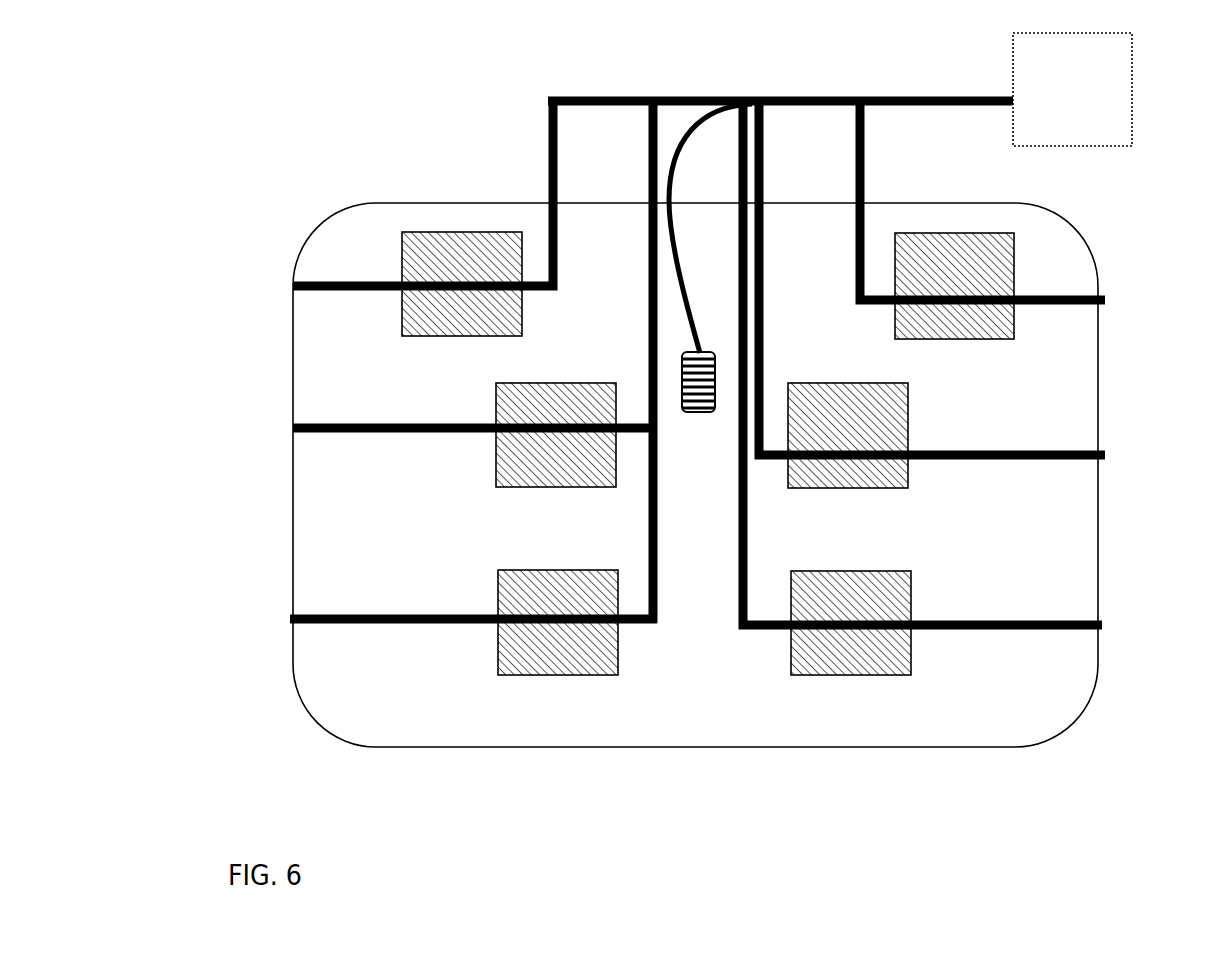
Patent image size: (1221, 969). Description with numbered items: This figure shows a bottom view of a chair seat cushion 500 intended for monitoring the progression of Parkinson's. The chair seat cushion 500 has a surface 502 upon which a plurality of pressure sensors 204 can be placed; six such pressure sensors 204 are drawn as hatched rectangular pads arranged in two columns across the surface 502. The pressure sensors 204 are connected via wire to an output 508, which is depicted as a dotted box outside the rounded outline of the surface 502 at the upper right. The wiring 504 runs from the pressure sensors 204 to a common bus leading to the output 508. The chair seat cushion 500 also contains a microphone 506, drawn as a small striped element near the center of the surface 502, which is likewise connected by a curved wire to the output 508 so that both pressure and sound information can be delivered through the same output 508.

The chair seat cushion 500 is at (312, 165).
The surface 502 is at (1025, 745).
The pressure sensors 204 is at (897, 675).
The conductive trace 504 is at (327, 291).
The microphone 506 is at (698, 412).
The output 508 is at (1013, 62).